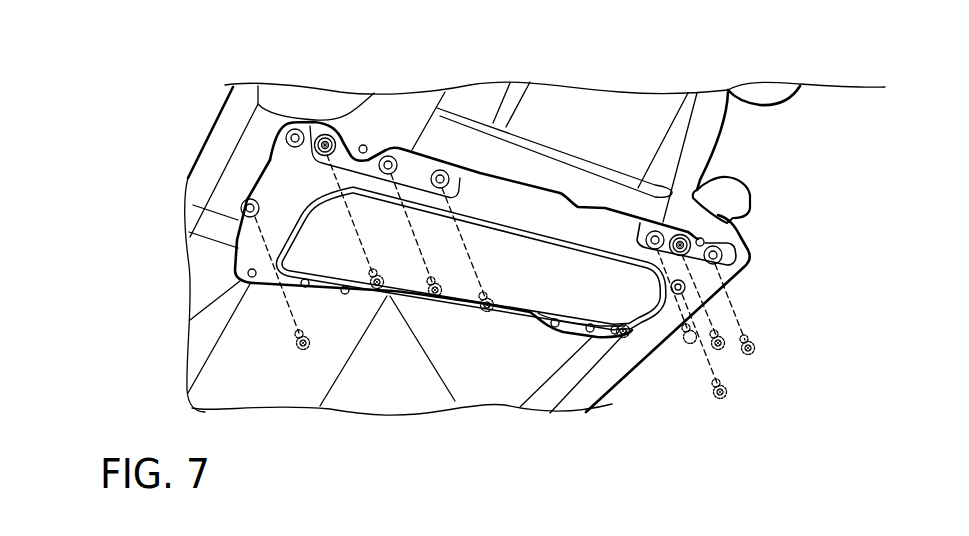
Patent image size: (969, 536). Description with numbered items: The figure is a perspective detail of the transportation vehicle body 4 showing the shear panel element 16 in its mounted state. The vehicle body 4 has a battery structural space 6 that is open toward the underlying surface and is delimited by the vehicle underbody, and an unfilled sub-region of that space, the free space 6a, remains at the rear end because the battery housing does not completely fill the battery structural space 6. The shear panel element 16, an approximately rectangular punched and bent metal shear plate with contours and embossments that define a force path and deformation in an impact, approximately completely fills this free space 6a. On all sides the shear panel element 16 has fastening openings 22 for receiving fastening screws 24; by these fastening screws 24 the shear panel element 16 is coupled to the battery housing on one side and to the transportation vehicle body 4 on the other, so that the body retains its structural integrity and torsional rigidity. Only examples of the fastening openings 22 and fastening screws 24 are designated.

The transportation vehicle body 4 is at (672, 106).
The battery structural space 6 is at (376, 388).
The free space 6a is at (262, 156).
The shear panel element 16 is at (572, 297).
The fastening openings 22 is at (327, 134).
The fastening screws 24 is at (303, 351).